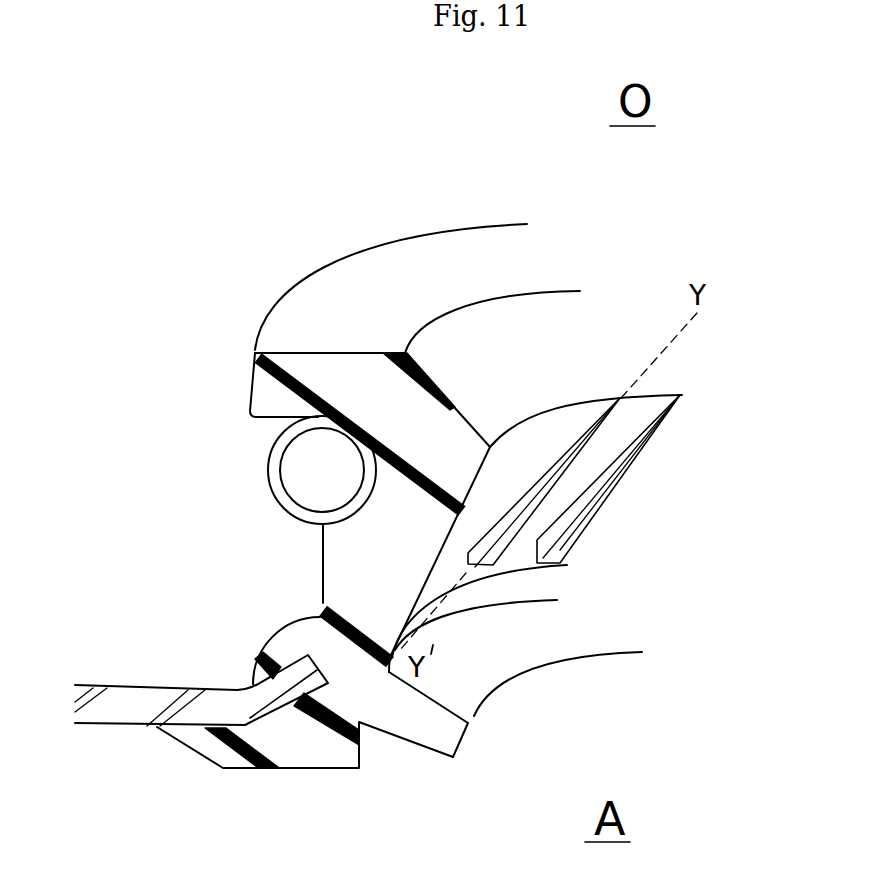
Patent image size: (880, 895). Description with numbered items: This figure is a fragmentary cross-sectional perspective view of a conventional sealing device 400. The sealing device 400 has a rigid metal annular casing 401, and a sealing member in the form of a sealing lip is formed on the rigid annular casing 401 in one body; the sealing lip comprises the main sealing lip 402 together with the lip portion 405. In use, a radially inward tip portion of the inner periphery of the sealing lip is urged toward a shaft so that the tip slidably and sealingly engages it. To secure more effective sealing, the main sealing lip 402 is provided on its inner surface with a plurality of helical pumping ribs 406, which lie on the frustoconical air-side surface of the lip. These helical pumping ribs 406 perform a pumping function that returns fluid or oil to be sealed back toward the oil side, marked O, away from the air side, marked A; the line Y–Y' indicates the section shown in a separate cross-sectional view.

The sealing device 400 is at (198, 298).
The rigid annular casing 401 is at (135, 705).
The main sealing lip 402 is at (445, 418).
The sealing lip 405 is at (432, 738).
The helical pumping rib 406 is at (560, 547).